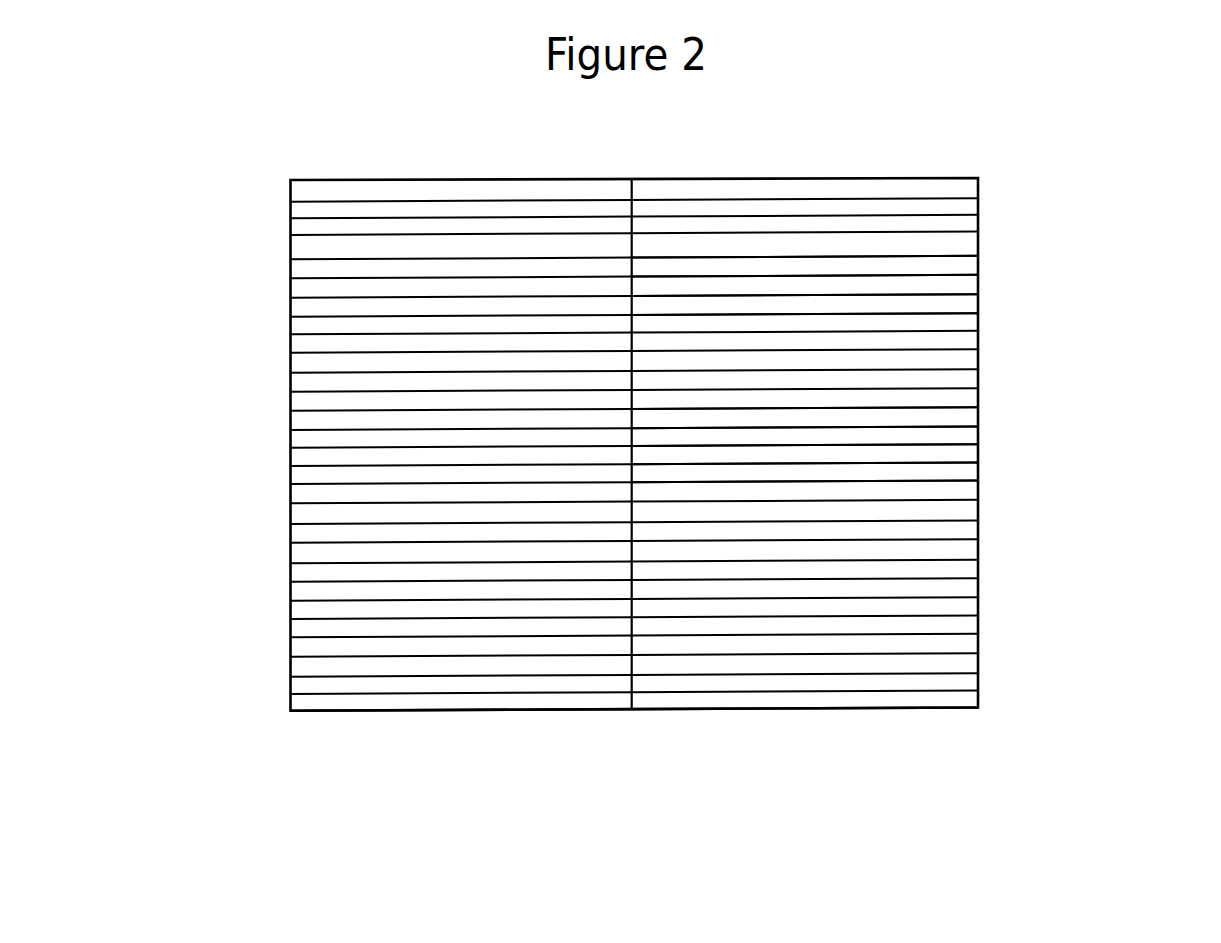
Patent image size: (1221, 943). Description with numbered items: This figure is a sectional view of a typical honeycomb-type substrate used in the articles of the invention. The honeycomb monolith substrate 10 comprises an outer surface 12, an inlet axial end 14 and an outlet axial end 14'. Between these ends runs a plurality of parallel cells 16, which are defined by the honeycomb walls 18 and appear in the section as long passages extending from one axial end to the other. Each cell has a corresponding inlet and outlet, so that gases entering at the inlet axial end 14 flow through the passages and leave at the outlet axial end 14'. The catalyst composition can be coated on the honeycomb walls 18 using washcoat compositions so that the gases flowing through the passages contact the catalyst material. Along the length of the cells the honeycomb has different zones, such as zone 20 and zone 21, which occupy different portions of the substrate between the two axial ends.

The honeycomb monolith substrate 10 is at (730, 163).
The outer surface 12 is at (753, 711).
The inlet axial end 14 is at (398, 447).
The outlet axial end 14' is at (904, 445).
The parallel cells 16 is at (968, 415).
The honeycomb walls 18 is at (958, 254).
The zone 20 is at (455, 711).
The zone 21 is at (817, 711).